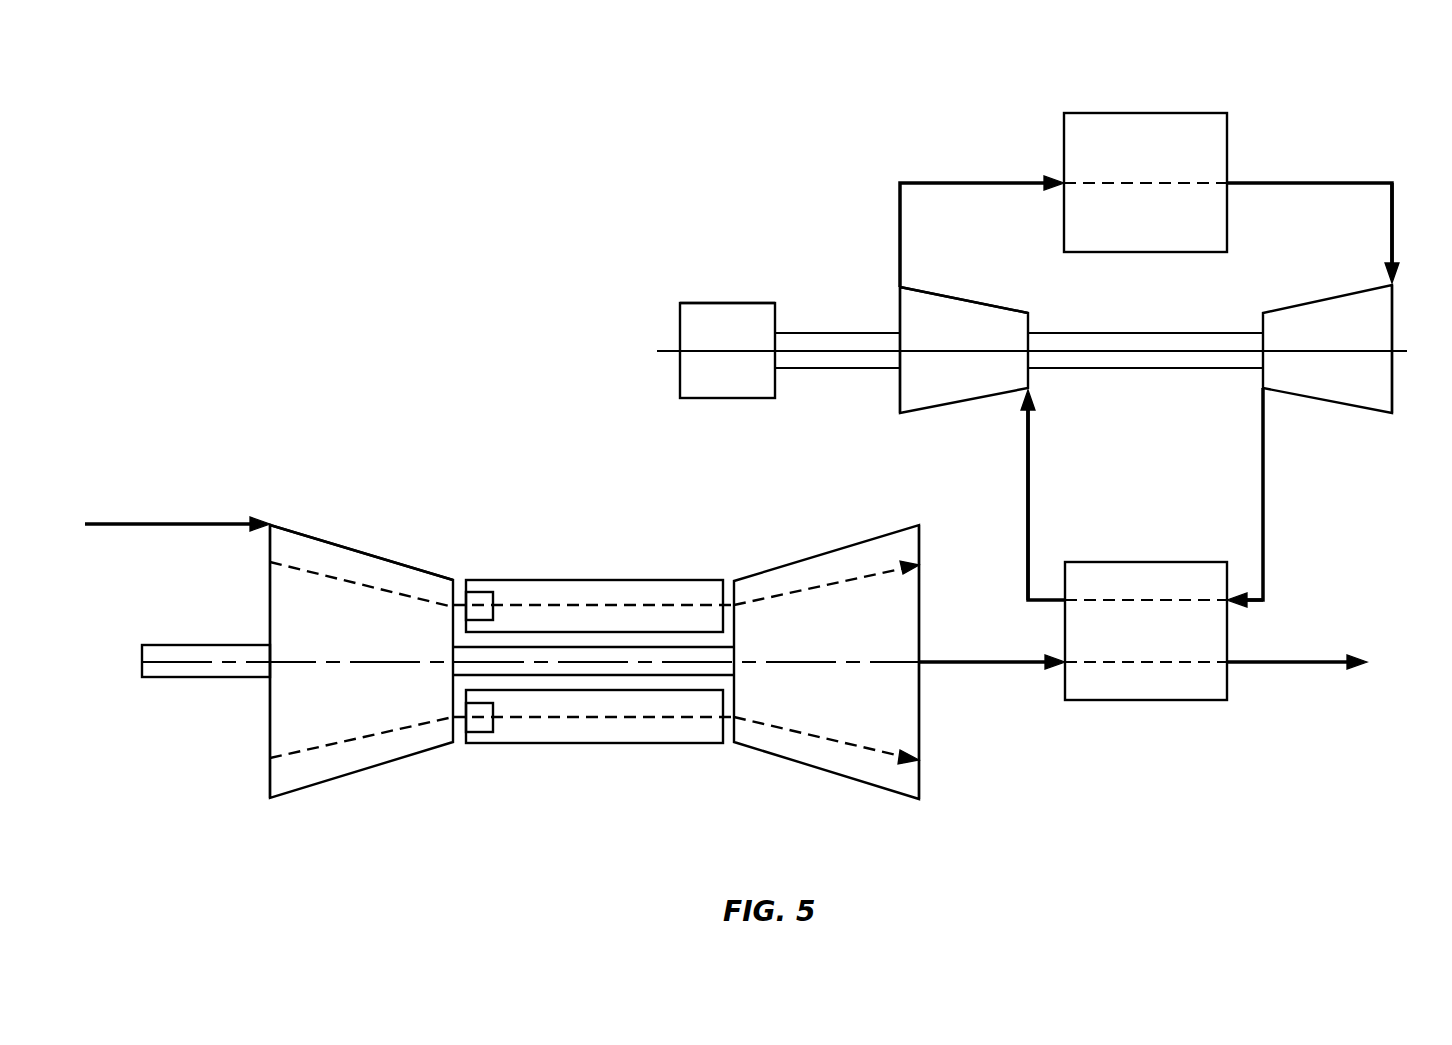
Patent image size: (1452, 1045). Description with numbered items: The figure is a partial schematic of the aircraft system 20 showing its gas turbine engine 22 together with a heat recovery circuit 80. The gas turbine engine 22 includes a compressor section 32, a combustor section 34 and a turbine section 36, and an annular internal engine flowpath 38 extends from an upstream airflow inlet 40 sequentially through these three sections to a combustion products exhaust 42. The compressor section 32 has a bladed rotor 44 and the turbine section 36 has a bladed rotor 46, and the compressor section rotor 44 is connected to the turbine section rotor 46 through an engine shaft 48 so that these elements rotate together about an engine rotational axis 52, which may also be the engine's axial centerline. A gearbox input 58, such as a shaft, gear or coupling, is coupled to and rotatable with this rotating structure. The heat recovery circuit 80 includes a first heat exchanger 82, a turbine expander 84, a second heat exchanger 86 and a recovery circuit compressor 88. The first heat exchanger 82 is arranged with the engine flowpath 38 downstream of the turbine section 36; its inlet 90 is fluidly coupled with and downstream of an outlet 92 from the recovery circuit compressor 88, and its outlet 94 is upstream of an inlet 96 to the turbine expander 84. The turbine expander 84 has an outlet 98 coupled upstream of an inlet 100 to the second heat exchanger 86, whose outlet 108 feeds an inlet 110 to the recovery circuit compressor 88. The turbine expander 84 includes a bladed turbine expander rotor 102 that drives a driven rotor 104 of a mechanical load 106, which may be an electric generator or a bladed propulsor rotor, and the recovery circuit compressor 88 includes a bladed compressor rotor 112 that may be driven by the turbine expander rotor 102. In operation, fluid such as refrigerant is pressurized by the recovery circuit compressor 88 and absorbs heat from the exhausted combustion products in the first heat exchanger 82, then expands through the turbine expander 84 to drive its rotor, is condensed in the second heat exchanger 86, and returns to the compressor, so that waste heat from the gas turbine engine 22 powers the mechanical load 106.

The system 20 is at (246, 217).
The gas turbine engine 22 is at (308, 476).
The compressor section 32 is at (360, 528).
The combustor section 34 is at (590, 540).
The turbine section 36 is at (808, 530).
The internal engine flowpath 38 is at (400, 588).
The upstream airflow inlet 40 is at (85, 524).
The combustion products exhaust 42 is at (1372, 662).
The bladed rotor 44 is at (268, 718).
The bladed rotor 46 is at (920, 723).
The engine shaft 48 is at (713, 647).
The engine rotational axis 52 is at (893, 663).
The gearbox input 58 is at (215, 644).
The heat recovery circuit 80 is at (1340, 109).
The first heat exchanger 82 is at (1145, 555).
The turbine expander 84 is at (950, 425).
The second heat exchanger 86 is at (1177, 95).
The recovery circuit compressor 88 is at (1412, 316).
The inlet 90 is at (1240, 598).
The outlet 92 is at (1263, 388).
The outlet 94 is at (1065, 600).
The inlet 96 is at (1028, 390).
The outlet 98 is at (900, 287).
The inlet 100 is at (1060, 187).
The bladed turbine expander rotor 102 is at (898, 313).
The driven rotor 104 is at (680, 325).
The mechanical load 106 is at (735, 290).
The outlet 108 is at (1227, 183).
The inlet 110 is at (1392, 283).
The bladed compressor rotor 112 is at (1397, 385).